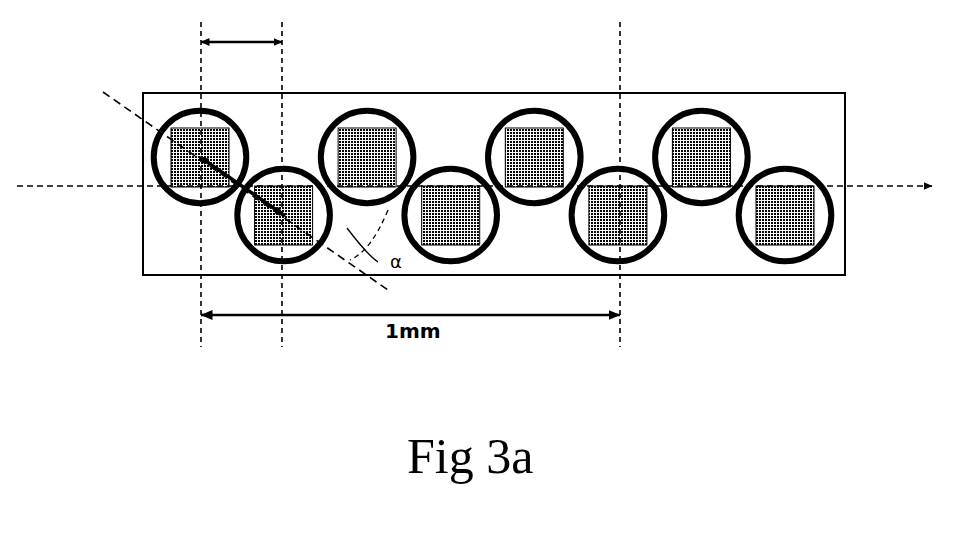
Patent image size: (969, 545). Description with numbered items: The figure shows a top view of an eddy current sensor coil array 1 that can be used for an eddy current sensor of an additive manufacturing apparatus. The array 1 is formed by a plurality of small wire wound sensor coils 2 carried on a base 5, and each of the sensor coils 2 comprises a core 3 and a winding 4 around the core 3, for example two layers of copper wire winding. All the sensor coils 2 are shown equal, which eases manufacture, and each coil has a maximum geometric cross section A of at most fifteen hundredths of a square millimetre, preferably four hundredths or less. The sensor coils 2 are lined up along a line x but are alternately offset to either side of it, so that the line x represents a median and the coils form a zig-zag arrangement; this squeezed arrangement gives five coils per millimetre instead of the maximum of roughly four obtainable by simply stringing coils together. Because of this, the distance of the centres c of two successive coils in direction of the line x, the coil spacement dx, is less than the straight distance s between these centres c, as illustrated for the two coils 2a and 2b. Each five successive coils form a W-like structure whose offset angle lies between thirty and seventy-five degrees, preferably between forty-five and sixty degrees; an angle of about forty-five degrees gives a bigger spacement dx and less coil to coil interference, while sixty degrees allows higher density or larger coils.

The eddy current sensor coil array 1 is at (457, 143).
The sensor coils 2 is at (470, 158).
The first coil 2a is at (150, 163).
The second coil 2b is at (239, 216).
The core 3 is at (756, 227).
The winding 4 is at (806, 215).
The base 5 is at (820, 123).
The maximum geometric cross section A is at (707, 162).
The straight distance s is at (230, 159).
The centre c is at (197, 222).
The line x is at (865, 182).
The coil spacement dx is at (269, 27).